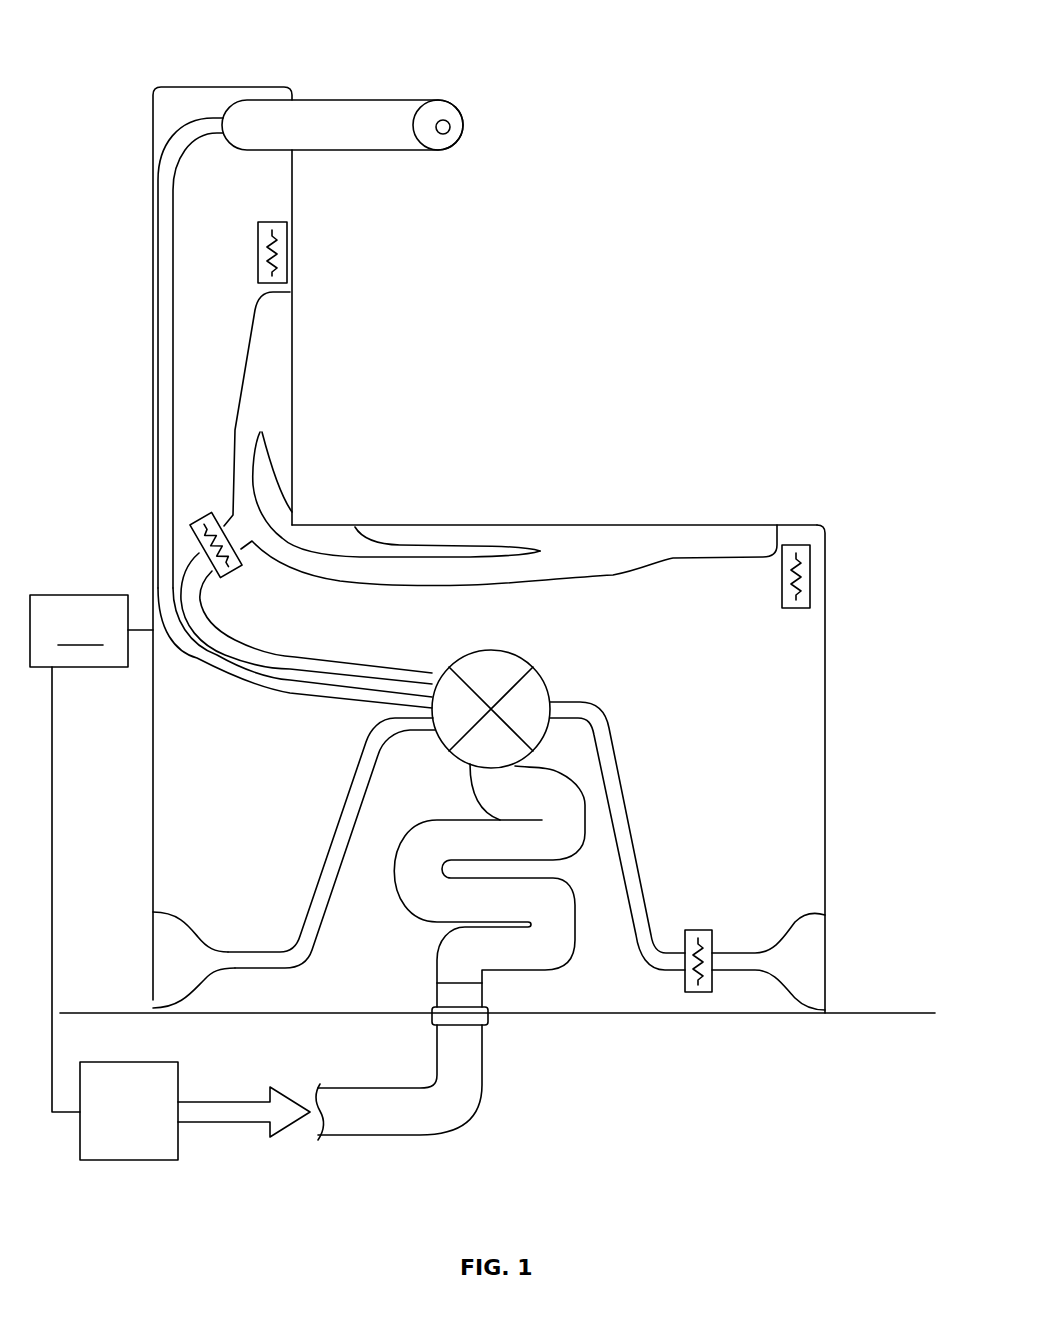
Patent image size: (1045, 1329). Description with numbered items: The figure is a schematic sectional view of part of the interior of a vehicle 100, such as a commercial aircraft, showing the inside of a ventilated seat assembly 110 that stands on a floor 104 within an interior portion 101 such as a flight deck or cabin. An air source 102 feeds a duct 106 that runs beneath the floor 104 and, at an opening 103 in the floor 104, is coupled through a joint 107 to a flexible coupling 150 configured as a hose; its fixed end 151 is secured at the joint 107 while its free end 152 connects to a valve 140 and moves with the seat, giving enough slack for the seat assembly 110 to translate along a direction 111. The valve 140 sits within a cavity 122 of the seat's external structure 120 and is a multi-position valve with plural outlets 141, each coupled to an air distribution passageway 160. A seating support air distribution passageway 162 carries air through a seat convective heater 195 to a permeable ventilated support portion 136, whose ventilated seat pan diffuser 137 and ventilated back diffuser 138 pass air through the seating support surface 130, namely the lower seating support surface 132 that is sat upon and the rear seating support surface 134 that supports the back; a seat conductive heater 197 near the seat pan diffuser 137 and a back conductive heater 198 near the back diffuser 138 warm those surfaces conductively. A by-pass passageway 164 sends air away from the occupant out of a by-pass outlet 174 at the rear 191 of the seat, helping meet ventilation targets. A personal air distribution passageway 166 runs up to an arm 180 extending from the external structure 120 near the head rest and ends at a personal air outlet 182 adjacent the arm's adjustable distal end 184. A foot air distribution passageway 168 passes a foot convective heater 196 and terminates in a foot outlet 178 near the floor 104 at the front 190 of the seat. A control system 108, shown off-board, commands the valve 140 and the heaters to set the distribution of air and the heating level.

The vehicle 100 is at (140, 48).
The interior portion 101 is at (590, 122).
The air source 102 is at (180, 1148).
The opening 103 is at (492, 1004).
The floor 104 is at (895, 1012).
The duct 106 is at (462, 1102).
The joint 107 is at (452, 1027).
The control system 108 is at (91, 853).
The seat assembly 110 is at (292, 66).
The direction 111 is at (829, 727).
The external structure 120 is at (160, 366).
The cavity 122 is at (486, 610).
The seating support surface 130 is at (652, 497).
The lower seating support surface 132 is at (598, 522).
The rear seating support surface 134 is at (293, 386).
The ventilated support portion 136 is at (392, 541).
The ventilated seat pan diffuser 137 is at (440, 542).
The ventilated back diffuser 138 is at (276, 333).
The valve 140 is at (503, 665).
The outlets 141 is at (438, 660).
The flexible coupling 150 is at (440, 914).
The fixed end 151 is at (428, 1010).
The free end 152 is at (535, 762).
The air distribution passageway 160 is at (378, 658).
The seating support air distribution passageway 162 is at (318, 668).
The by-pass passageway 164 is at (322, 878).
The personal air distribution passageway 166 is at (282, 690).
The foot air distribution passageway 168 is at (628, 838).
The by-pass outlet 174 is at (173, 946).
The foot outlet 178 is at (808, 925).
The arm 180 is at (345, 115).
The personal air outlet 182 is at (445, 122).
The distal end 184 is at (449, 162).
The front 190 is at (840, 810).
The rear 191 is at (146, 792).
The seat convective heater 195 is at (242, 572).
The foot convective heater 196 is at (700, 933).
The seat conductive heater 197 is at (797, 545).
The back conductive heater 198 is at (287, 247).